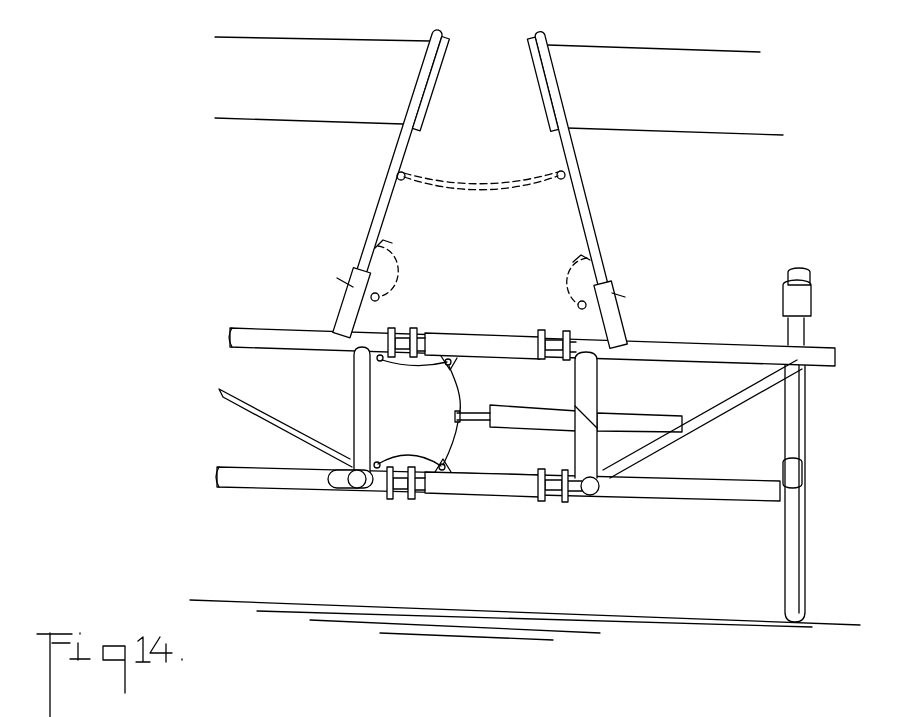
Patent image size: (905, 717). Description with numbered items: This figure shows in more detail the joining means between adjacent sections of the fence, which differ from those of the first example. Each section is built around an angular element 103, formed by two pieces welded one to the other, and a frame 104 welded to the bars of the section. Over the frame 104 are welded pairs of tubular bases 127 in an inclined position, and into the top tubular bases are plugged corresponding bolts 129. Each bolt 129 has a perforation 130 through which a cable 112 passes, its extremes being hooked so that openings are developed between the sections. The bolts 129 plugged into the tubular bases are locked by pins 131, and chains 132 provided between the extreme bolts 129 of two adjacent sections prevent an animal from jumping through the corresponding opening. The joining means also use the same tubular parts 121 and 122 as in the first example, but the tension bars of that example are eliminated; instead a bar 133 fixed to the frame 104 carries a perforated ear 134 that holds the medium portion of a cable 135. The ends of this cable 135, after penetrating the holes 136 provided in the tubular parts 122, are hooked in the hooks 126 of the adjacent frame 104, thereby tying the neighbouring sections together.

The angular element 103 is at (773, 573).
The frame 104 is at (248, 327).
The cable 112 is at (312, 42).
The tubular part 121 is at (427, 331).
The tubular part 122 is at (477, 331).
The hook 126 is at (377, 370).
The tubular base 127 is at (343, 312).
The bolt 129 is at (598, 242).
The perforation 130 is at (548, 43).
The pin 131 is at (382, 298).
The chain 132 is at (488, 182).
The bar 133 is at (695, 393).
The perforated ear 134 is at (460, 420).
The cable 135 is at (460, 395).
The hole 136 is at (457, 363).